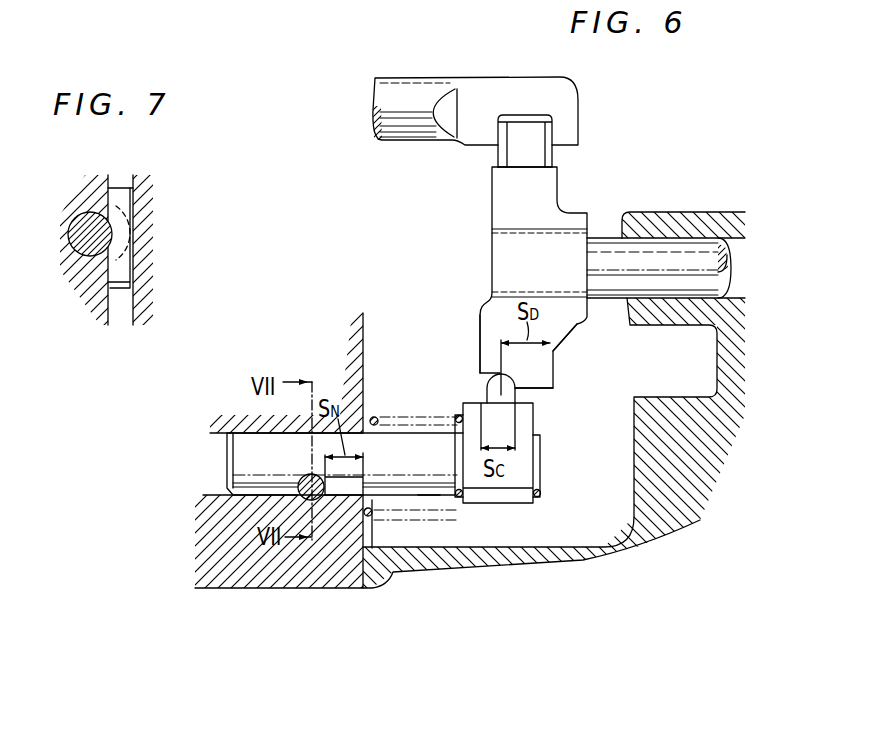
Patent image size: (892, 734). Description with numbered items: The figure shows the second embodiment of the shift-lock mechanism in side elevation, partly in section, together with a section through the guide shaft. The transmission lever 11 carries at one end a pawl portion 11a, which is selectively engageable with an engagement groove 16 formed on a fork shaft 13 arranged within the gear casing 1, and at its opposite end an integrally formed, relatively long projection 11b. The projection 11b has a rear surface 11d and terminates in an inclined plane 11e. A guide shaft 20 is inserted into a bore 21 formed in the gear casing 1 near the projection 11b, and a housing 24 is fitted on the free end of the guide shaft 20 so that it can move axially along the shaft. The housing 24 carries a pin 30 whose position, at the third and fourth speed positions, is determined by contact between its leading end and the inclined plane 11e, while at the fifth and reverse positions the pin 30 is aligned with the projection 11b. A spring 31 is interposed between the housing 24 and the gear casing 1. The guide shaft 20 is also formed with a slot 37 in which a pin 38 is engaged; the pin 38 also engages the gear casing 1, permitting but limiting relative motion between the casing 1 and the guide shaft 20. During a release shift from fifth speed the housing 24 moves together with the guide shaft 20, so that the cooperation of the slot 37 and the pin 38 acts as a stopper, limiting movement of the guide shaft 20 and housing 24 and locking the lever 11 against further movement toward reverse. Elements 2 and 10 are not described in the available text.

In FIG. 6, the gear casing 1 is at (328, 588).
In FIG. 7, the gear casing 1 is at (145, 180).
In FIG. 6, the housing 2 is at (605, 559).
In FIG. 6, the rod 10 is at (669, 245).
In FIG. 6, the transmission lever 11 is at (492, 270).
In FIG. 6, the pawl portion 11a is at (557, 157).
In FIG. 6, the projection 11b is at (484, 330).
In FIG. 6, the rear surface 11d is at (554, 358).
In FIG. 6, the inclined plane 11e is at (554, 385).
In FIG. 6, the fork shaft 13 is at (433, 80).
In FIG. 6, the engagement groove 16 is at (520, 114).
In FIG. 6, the guide shaft 20 is at (427, 488).
In FIG. 7, the guide shaft 20 is at (82, 203).
In FIG. 6, the bore 21 is at (222, 435).
In FIG. 6, the housing 24 is at (535, 508).
In FIG. 6, the pin 30 is at (490, 383).
In FIG. 6, the spring 31 is at (390, 415).
In FIG. 6, the slot 37 is at (358, 483).
In FIG. 7, the slot 37 is at (112, 244).
In FIG. 6, the pin 38 is at (300, 479).
In FIG. 7, the pin 38 is at (133, 263).